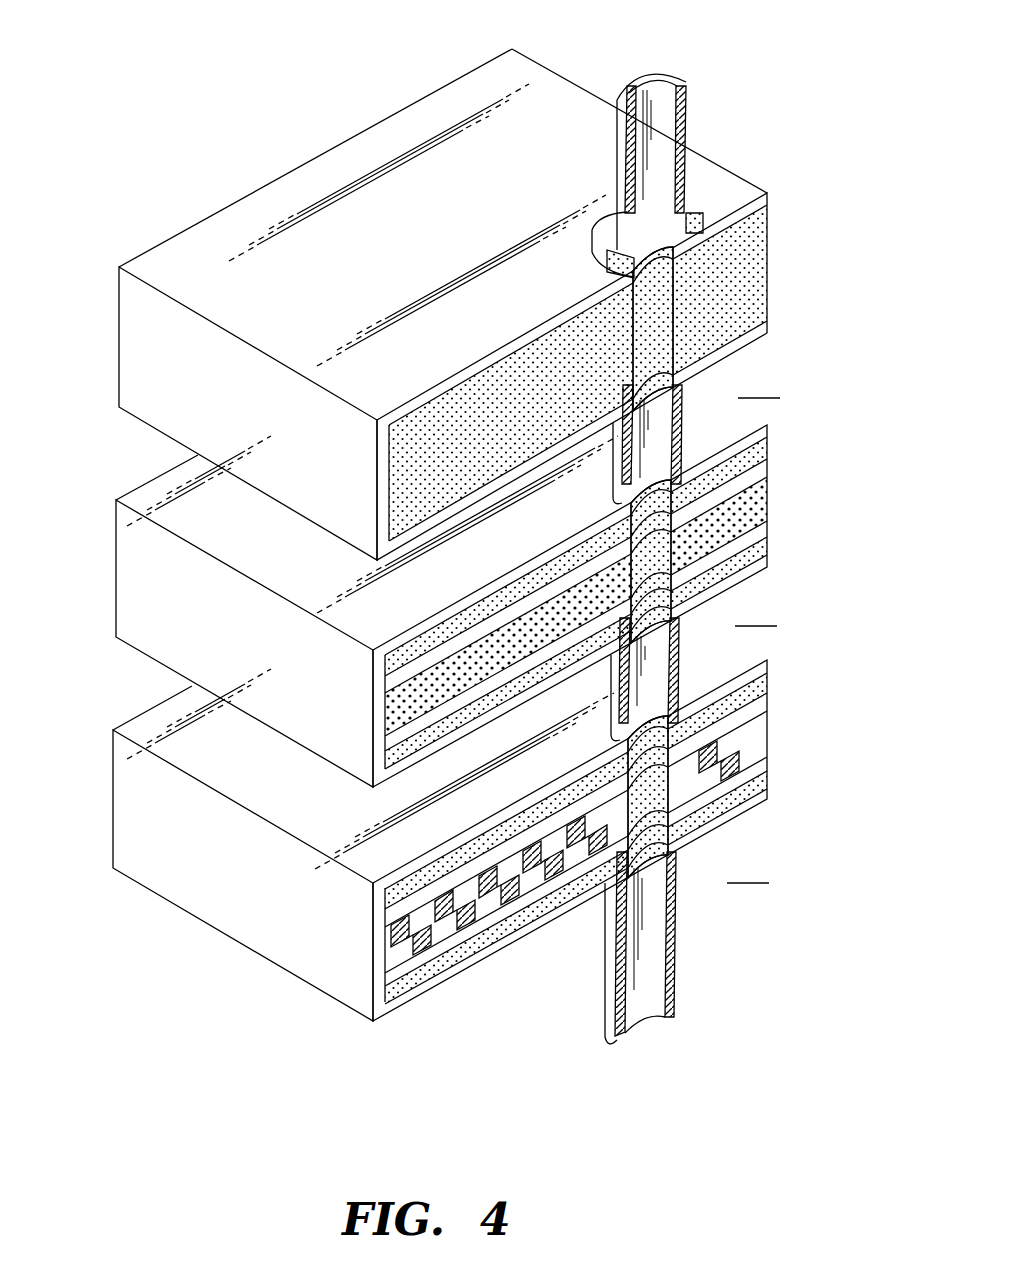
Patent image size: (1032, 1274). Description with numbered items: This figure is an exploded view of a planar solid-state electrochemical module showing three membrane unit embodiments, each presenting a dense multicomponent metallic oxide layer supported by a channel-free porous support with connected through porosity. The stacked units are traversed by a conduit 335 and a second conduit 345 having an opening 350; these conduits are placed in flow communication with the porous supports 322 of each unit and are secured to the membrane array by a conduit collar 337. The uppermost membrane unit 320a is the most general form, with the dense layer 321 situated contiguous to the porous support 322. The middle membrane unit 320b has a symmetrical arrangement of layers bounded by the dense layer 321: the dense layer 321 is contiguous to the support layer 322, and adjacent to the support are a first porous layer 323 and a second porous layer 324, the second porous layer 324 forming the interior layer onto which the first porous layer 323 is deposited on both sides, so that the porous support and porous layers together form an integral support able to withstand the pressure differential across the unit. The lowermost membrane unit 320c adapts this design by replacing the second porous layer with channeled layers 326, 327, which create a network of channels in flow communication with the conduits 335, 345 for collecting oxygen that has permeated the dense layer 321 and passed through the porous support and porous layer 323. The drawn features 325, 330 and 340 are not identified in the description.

The membrane unit 320a is at (137, 353).
The membrane unit 320b is at (132, 585).
The membrane unit 320c is at (130, 813).
The dense multicomponent metallic oxide layer 321 is at (770, 203).
The porous support 322 is at (750, 280).
The first porous layer 323 is at (768, 468).
The second porous layer 324 is at (768, 499).
The panel section 325 is at (755, 626).
The channeled layer 326 is at (768, 725).
The channeled layer 327 is at (768, 740).
The potting material 330 is at (660, 293).
The conduit 335 is at (686, 117).
The conduit collar 337 is at (692, 213).
The outer sleeve 340 is at (600, 1003).
The conduit 345 is at (651, 97).
The opening 350 is at (641, 1003).